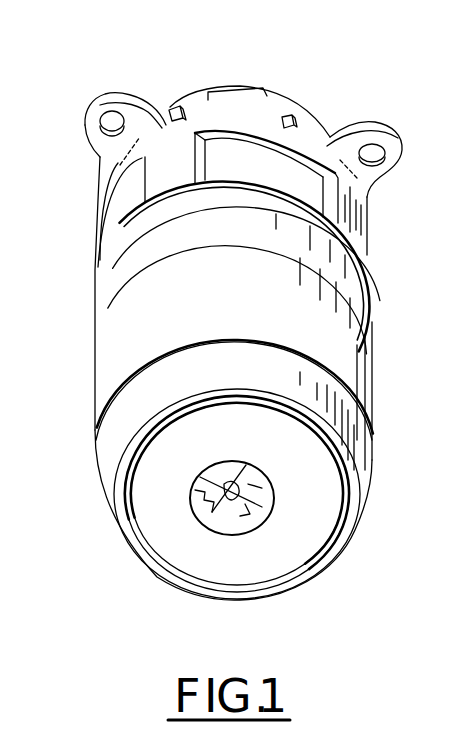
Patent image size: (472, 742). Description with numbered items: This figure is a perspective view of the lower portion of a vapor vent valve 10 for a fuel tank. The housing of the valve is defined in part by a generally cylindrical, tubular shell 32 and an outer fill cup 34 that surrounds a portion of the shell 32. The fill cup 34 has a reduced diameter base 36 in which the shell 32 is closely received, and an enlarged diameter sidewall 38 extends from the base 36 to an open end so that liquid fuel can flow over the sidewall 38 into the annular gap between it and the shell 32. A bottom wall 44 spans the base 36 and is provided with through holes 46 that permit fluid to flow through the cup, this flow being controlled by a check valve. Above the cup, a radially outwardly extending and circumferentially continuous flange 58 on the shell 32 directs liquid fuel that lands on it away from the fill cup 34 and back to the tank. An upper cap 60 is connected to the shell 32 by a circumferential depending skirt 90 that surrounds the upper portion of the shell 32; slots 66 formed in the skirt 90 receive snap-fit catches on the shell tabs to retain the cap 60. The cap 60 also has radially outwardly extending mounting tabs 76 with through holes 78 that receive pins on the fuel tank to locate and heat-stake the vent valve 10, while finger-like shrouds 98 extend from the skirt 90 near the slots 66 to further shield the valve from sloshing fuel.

The vent valve 10 is at (382, 53).
The shell 32 is at (356, 305).
The fill cup 34 is at (372, 383).
The base 36 is at (123, 443).
The sidewall 38 is at (102, 347).
The bottom wall 44 is at (292, 566).
The through holes 46 is at (233, 523).
The flange 58 is at (362, 290).
The upper cap 60 is at (93, 218).
The slots 66 is at (296, 119).
The mounting tabs 76 is at (103, 98).
The through holes 78 is at (113, 118).
The skirt 90 is at (283, 97).
The shrouds 98 is at (155, 174).